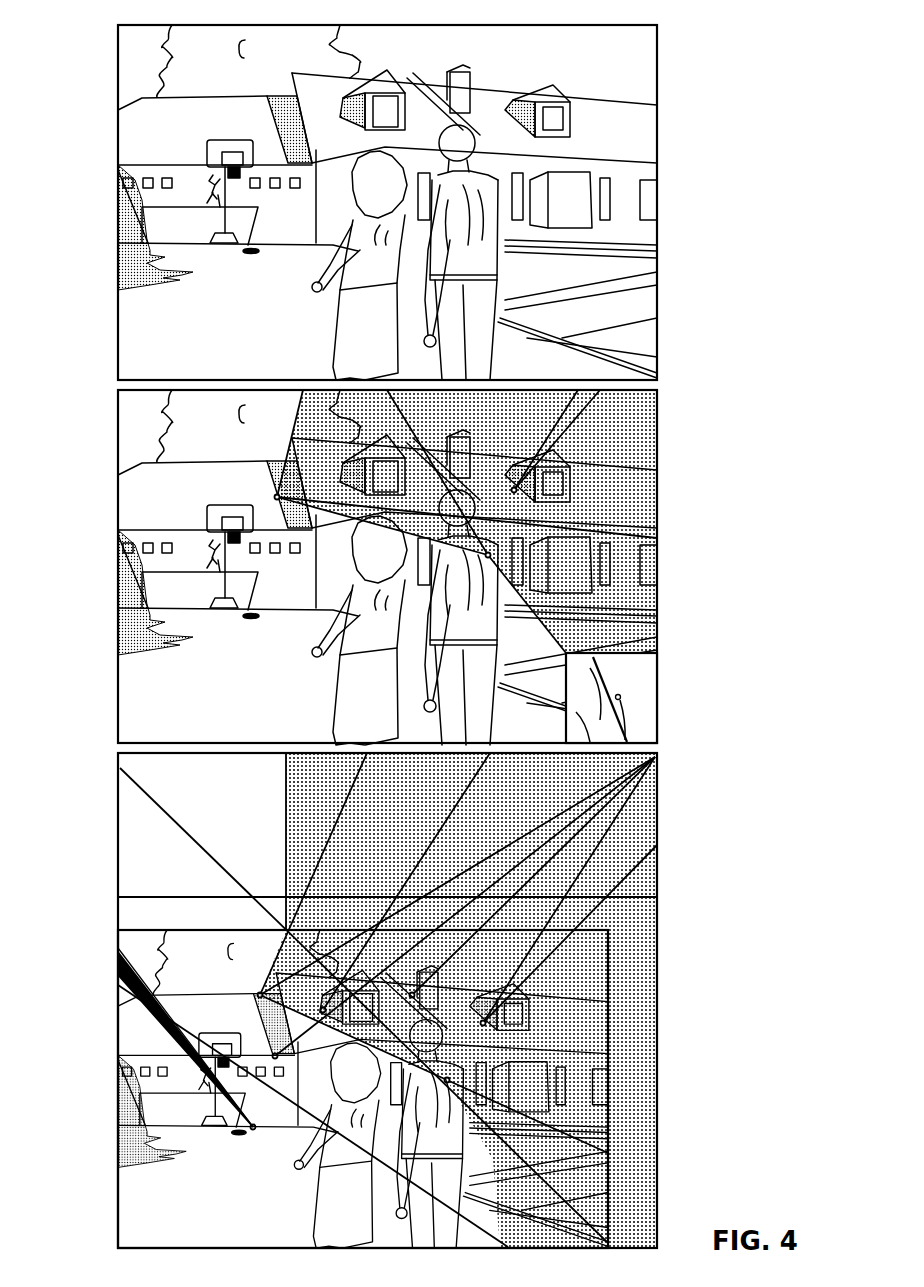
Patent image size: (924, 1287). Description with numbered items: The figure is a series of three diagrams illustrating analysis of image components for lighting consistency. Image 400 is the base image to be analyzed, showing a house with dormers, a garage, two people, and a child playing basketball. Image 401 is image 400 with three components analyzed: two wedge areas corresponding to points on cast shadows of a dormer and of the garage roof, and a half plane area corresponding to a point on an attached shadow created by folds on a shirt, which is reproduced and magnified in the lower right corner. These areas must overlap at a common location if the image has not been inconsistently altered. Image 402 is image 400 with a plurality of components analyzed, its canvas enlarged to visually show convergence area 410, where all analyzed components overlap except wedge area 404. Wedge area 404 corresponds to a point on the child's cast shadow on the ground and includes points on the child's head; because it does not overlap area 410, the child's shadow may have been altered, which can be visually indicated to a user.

The image 400 is at (684, 58).
The image 401 is at (684, 423).
The image 402 is at (684, 958).
The wedge area 404 is at (118, 993).
The convergence area 410 is at (655, 760).